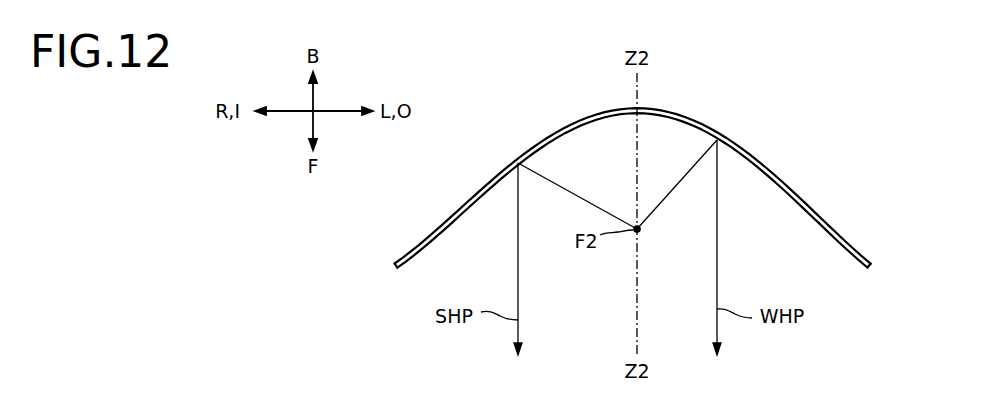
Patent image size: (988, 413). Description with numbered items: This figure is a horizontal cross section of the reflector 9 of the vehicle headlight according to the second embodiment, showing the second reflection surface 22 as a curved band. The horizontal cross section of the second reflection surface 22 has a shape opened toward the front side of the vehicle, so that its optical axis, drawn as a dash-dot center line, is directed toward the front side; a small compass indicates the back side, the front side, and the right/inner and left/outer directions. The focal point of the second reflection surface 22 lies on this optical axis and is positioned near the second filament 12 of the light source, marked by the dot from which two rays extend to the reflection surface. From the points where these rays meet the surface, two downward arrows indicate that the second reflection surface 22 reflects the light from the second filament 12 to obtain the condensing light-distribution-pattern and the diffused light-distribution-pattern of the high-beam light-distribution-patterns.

The reflector 9 is at (810, 198).
The second reflection surface 22 is at (838, 240).
The second filament 12 is at (641, 230).